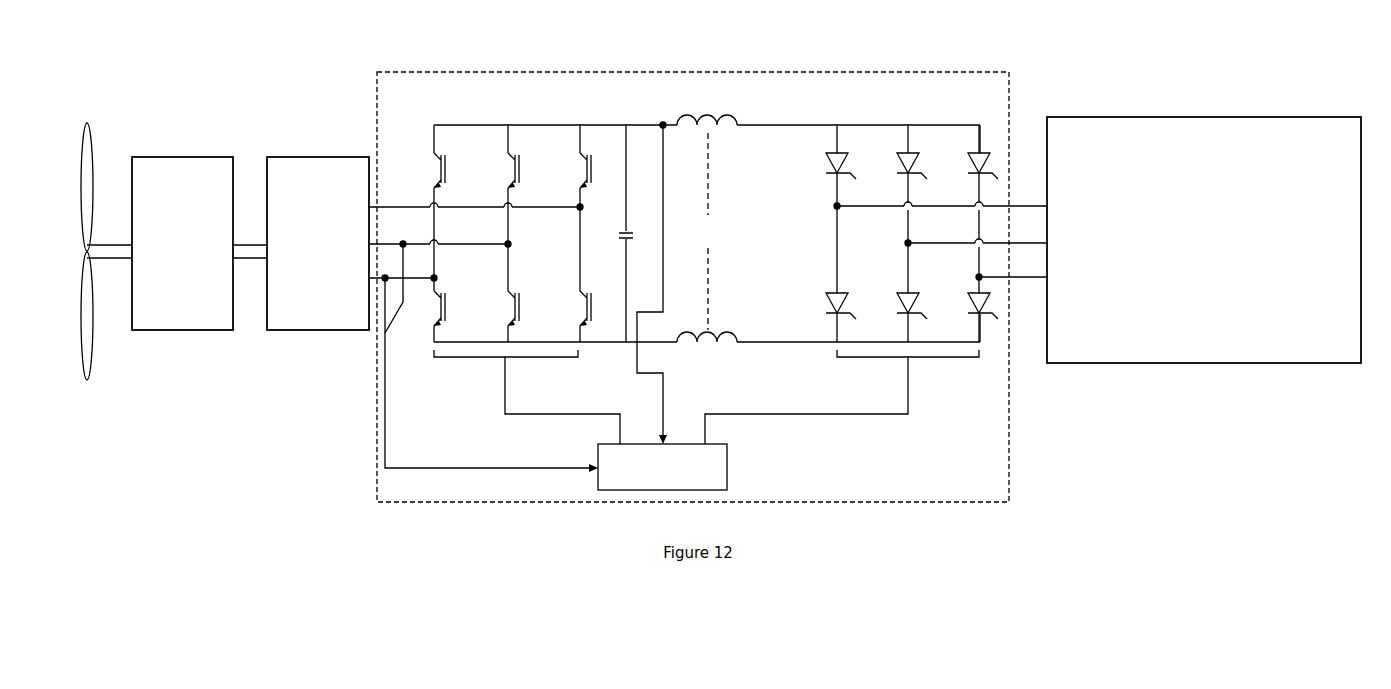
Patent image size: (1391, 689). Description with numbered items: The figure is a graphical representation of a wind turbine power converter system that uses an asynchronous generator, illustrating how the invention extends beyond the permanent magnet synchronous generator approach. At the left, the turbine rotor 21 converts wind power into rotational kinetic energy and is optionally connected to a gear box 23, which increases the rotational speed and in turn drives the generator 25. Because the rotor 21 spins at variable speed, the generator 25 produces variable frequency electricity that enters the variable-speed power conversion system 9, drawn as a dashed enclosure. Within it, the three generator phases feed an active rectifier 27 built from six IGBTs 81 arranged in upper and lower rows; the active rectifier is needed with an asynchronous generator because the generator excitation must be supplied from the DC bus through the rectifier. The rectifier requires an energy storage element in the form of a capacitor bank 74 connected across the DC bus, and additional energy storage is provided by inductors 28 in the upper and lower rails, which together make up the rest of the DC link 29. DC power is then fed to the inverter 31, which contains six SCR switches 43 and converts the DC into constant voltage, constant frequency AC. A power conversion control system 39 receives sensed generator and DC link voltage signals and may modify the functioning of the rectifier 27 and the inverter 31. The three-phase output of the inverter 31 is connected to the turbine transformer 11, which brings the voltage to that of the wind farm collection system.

The power conversion system 9 is at (973, 63).
The turbine transformer 11 is at (1352, 113).
The rotor 21 is at (87, 250).
The gear box 23 is at (199, 243).
The generator 25 is at (318, 243).
The active rectifier 27 is at (443, 125).
The inductors 28 is at (707, 234).
The DC link 29 is at (693, 231).
The inverter 31 is at (950, 123).
The power conversion control system 39 is at (682, 308).
The SCR switches 43 is at (900, 233).
The capacitor bank 74 is at (636, 233).
The IGBTs 81 is at (508, 233).